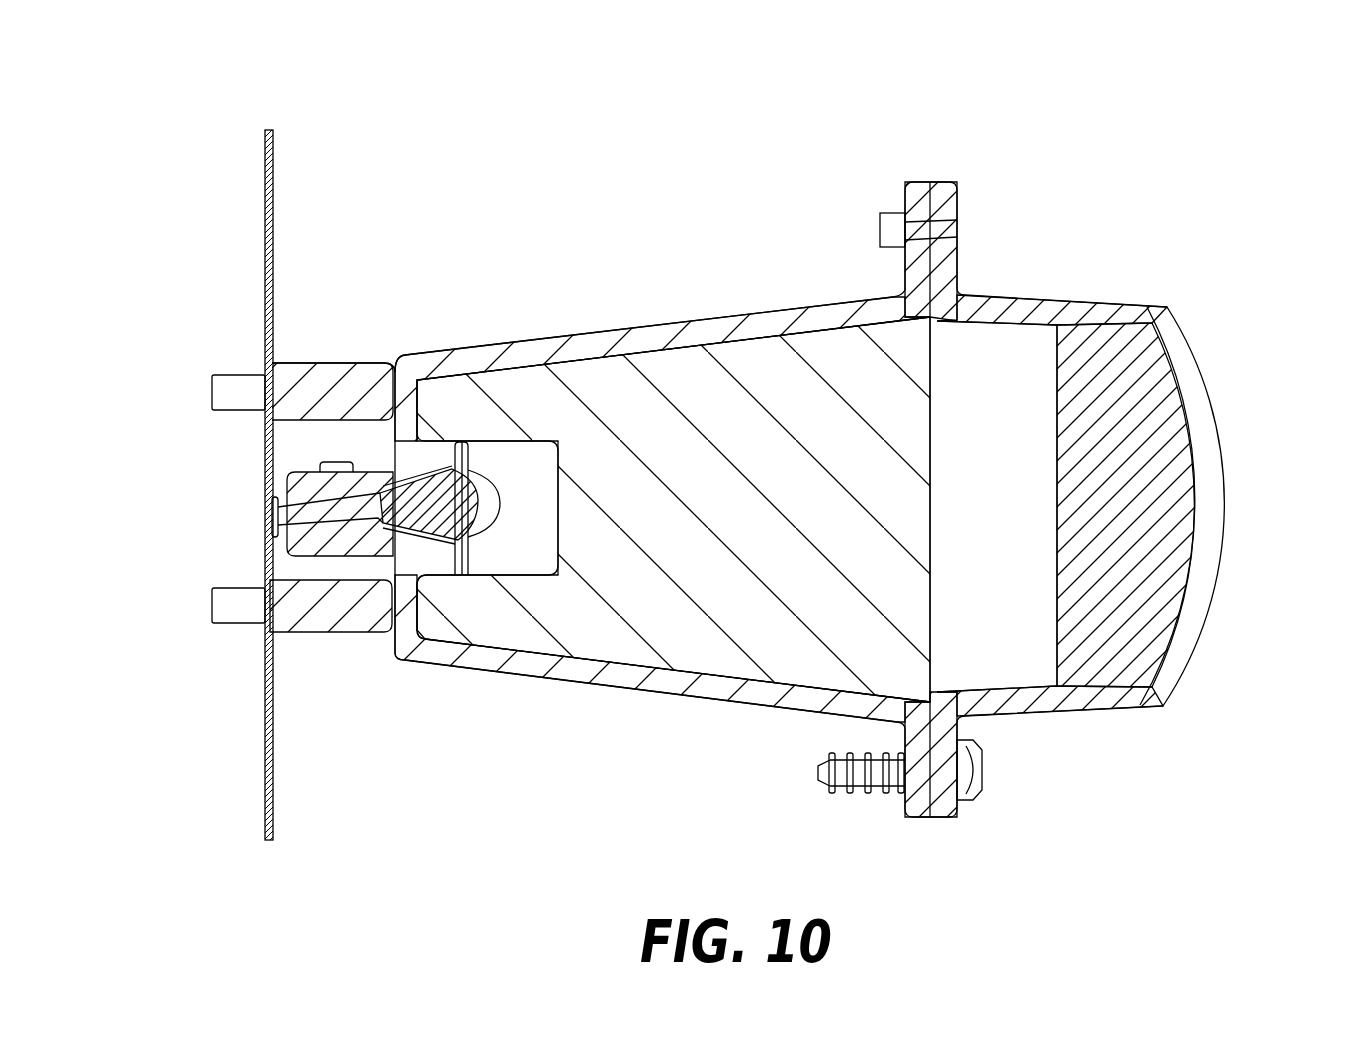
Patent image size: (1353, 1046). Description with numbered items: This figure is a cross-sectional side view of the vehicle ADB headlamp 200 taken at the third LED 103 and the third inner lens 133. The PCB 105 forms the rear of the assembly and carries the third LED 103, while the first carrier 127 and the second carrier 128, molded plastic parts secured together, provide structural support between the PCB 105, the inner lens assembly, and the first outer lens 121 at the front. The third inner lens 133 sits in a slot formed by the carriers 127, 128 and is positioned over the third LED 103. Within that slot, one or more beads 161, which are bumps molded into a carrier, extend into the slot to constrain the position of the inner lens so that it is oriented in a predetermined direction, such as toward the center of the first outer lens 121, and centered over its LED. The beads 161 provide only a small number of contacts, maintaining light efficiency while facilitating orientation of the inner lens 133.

The vehicle ADB headlamp 200 is at (322, 99).
The PCB 105 is at (265, 223).
The third LED 103 is at (268, 517).
The first carrier 127 is at (623, 337).
The second carrier 128 is at (626, 676).
The first outer lens 121 is at (1207, 415).
The third inner lens 133 is at (425, 503).
The bead 161 is at (330, 480).